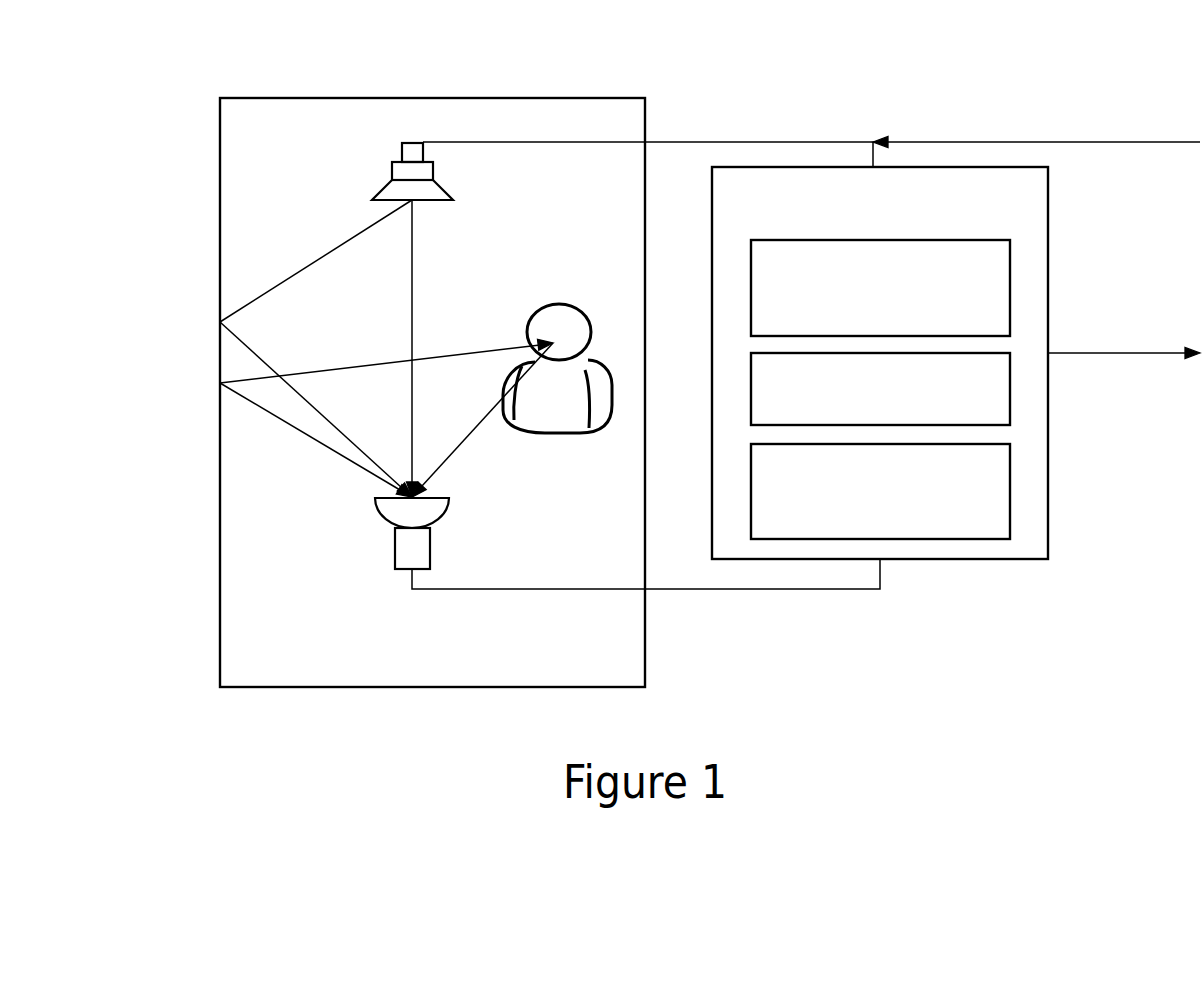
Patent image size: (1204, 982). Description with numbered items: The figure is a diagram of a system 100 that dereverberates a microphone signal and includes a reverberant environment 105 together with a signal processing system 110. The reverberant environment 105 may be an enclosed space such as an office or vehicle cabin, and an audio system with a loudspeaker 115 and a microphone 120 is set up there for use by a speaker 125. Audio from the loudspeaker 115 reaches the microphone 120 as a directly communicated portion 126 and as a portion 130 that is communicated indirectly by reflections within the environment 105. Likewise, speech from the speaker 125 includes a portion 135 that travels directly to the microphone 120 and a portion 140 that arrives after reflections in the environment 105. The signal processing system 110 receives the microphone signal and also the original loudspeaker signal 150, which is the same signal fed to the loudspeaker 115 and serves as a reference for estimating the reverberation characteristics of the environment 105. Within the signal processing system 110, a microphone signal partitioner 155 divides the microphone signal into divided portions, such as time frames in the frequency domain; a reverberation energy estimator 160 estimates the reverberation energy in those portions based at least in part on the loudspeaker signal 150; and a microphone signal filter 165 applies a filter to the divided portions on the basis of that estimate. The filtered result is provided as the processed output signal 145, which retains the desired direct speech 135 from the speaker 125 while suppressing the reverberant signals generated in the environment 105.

The system 100 is at (752, 652).
The reverberant environment 105 is at (301, 672).
The signal processing system 110 is at (854, 228).
The loudspeaker 115 is at (410, 195).
The microphone 120 is at (442, 517).
The speaker 125 is at (578, 415).
The directly communicated loudspeaker audio portion 126 is at (413, 243).
The indirectly communicated loudspeaker audio portion 130 is at (243, 345).
The directly communicated speech portion 135 is at (455, 455).
The reflected speech portion 140 is at (283, 425).
The processed output signal 145 is at (1120, 357).
The loudspeaker signal 150 is at (1110, 142).
The microphone signal partitioner 155 is at (861, 529).
The reverberation energy estimator 160 is at (861, 326).
The microphone signal filter 165 is at (861, 417).